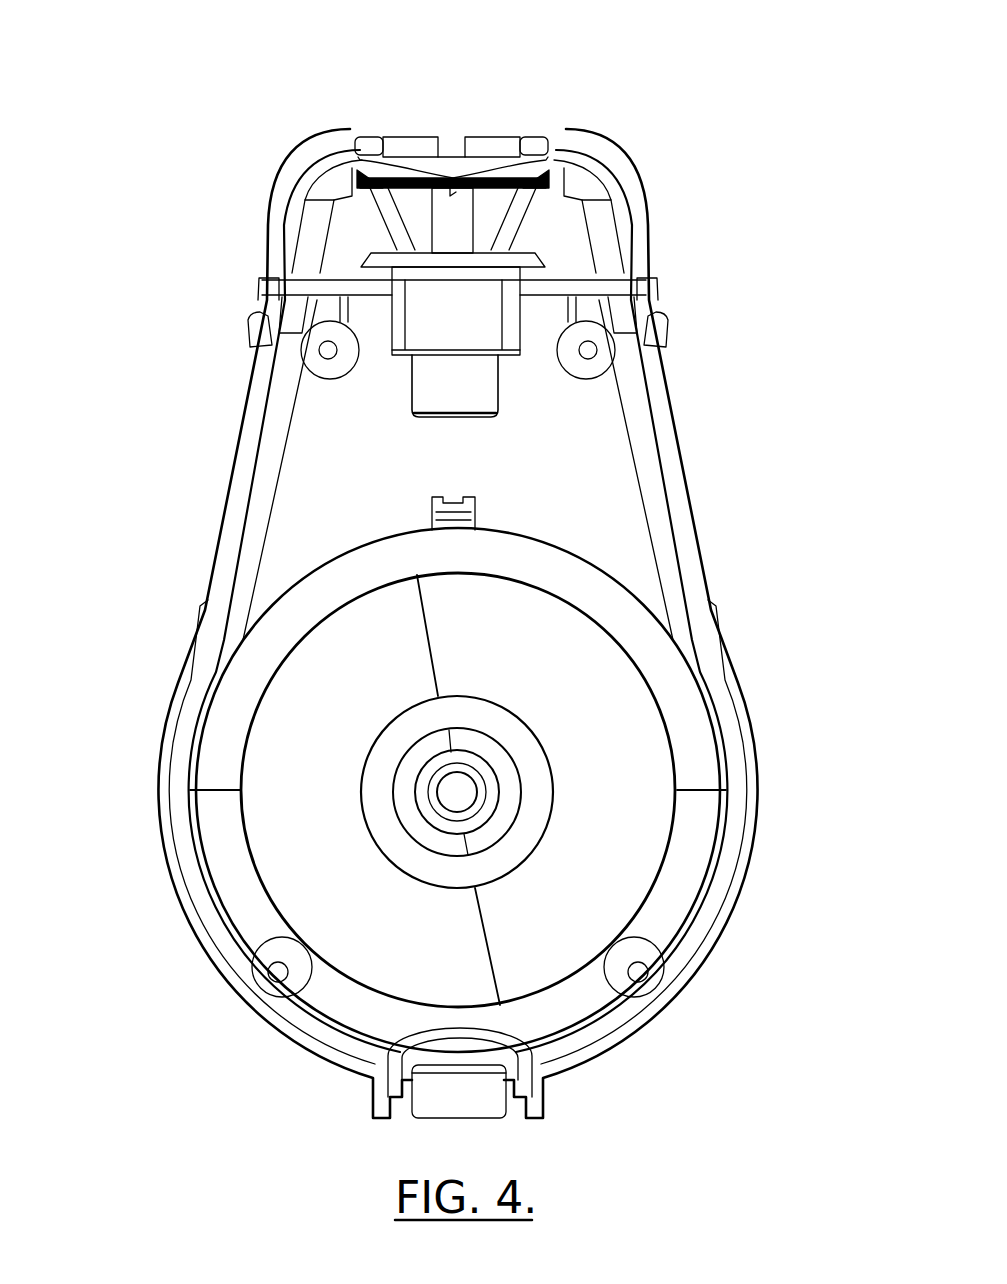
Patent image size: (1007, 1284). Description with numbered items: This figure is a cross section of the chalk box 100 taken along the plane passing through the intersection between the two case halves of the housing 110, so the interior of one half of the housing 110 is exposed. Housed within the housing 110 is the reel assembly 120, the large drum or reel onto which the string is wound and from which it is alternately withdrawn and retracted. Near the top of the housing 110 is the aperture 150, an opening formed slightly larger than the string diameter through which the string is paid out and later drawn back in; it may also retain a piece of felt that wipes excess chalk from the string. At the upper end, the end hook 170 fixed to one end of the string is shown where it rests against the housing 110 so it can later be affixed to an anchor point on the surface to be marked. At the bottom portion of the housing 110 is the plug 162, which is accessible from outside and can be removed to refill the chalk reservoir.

The chalk box 100 is at (144, 104).
The housing 110 is at (634, 162).
The reel assembly 120 is at (335, 872).
The aperture 150 is at (420, 426).
The plug 162 is at (437, 1088).
The end hook 170 is at (485, 142).